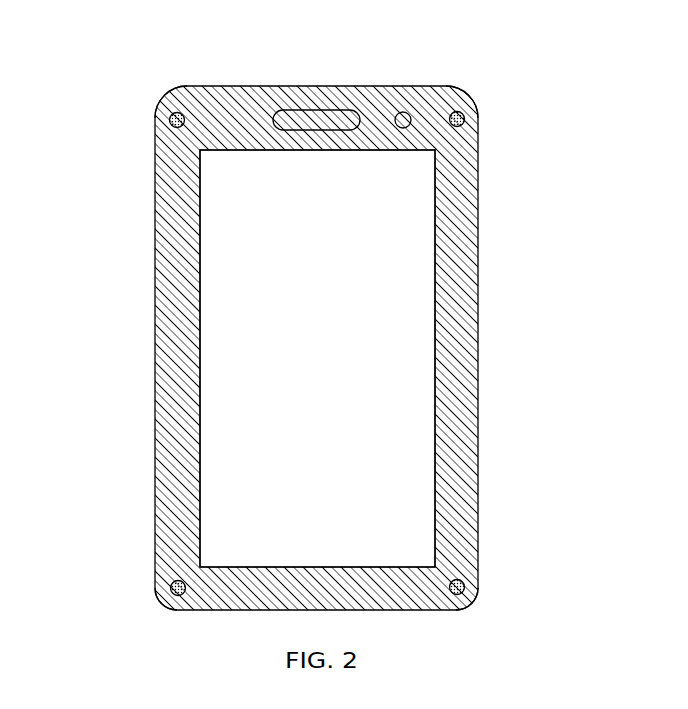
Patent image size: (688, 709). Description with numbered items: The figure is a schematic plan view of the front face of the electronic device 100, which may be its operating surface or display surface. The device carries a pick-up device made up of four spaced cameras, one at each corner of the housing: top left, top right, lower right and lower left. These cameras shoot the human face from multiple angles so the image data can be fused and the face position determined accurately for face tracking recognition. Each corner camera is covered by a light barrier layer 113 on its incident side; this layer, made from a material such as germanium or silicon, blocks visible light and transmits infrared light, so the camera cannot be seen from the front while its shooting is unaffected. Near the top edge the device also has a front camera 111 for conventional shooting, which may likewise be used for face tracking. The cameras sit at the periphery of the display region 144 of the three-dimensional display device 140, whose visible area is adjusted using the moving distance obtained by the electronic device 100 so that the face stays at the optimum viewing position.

The electronic device 100 is at (197, 46).
The front camera 111 is at (400, 110).
The light barrier layer 113 is at (172, 123).
The 3D display device 140 is at (236, 318).
The display region 144 is at (393, 341).